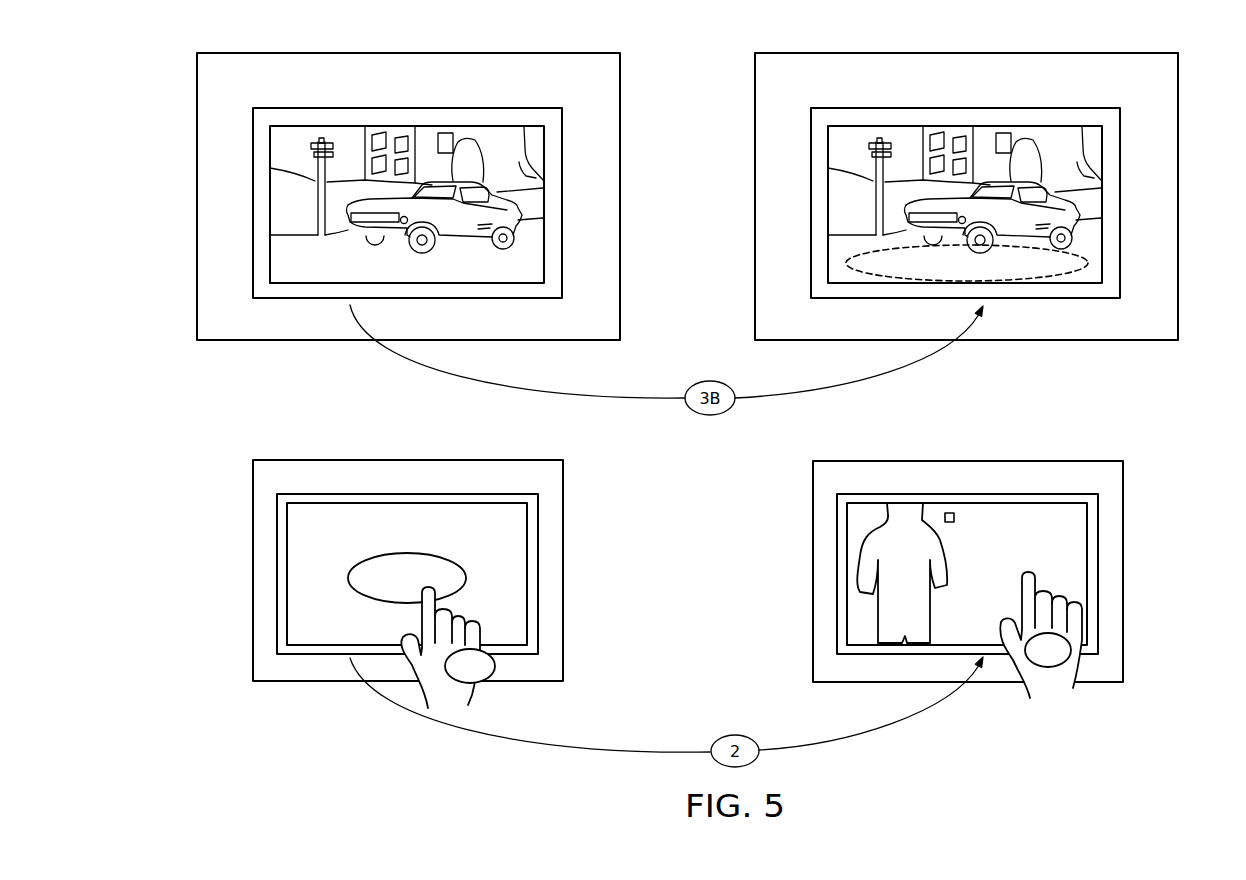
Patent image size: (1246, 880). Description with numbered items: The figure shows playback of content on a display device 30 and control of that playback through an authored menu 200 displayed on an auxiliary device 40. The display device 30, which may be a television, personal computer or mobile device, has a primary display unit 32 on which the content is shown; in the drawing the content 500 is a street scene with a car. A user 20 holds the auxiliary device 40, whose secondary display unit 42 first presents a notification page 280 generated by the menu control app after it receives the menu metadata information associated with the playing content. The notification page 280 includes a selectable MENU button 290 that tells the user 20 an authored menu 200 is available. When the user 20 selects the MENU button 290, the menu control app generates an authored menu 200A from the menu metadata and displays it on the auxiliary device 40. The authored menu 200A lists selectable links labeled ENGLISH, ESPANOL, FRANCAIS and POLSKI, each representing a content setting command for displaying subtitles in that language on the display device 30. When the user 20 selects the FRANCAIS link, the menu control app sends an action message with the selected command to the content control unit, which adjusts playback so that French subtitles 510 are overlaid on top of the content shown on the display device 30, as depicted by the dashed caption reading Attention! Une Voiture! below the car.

The display device 30 is at (572, 53).
The primary display unit 32 is at (563, 157).
The displayed video content 500 is at (281, 260).
The French subtitles 510 is at (1088, 263).
The auxiliary device 40 is at (280, 460).
The secondary display unit 42 is at (537, 536).
The notification page 280 is at (517, 524).
The MENU button 290 is at (467, 577).
The user 20 is at (467, 707).
The authored menu 200 is at (849, 522).
The authored menu 200A is at (1063, 527).